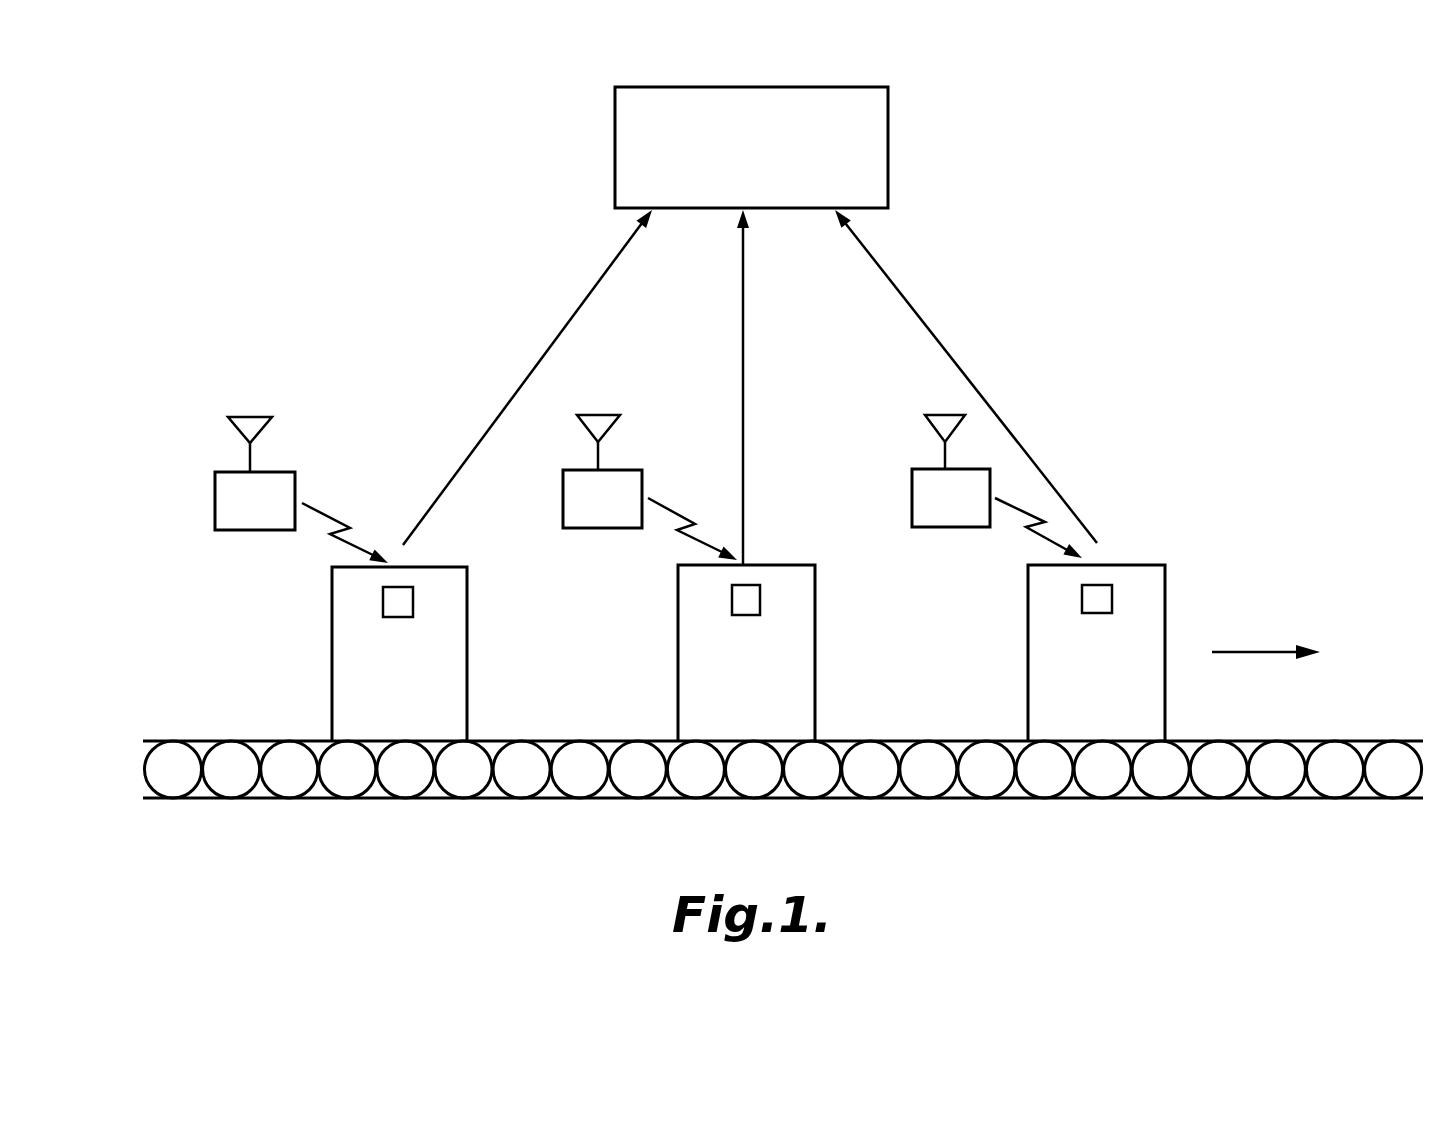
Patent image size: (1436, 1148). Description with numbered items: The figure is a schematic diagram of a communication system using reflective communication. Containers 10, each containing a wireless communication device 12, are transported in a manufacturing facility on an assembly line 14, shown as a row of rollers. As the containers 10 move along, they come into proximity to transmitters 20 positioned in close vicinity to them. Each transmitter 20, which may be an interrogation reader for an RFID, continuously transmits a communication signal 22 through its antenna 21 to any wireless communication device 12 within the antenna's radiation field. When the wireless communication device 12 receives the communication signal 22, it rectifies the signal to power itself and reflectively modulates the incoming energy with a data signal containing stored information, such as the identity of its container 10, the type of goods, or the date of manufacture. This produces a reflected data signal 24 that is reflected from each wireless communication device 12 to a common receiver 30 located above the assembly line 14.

The container 10 is at (332, 603).
The wireless communication device 12 is at (398, 587).
The assembly line 14 is at (1300, 799).
The transmitter 20 is at (238, 510).
The antenna 21 is at (253, 414).
The communication signal 22 is at (333, 519).
The reflected data signal 24 is at (523, 385).
The receiver 30 is at (734, 176).